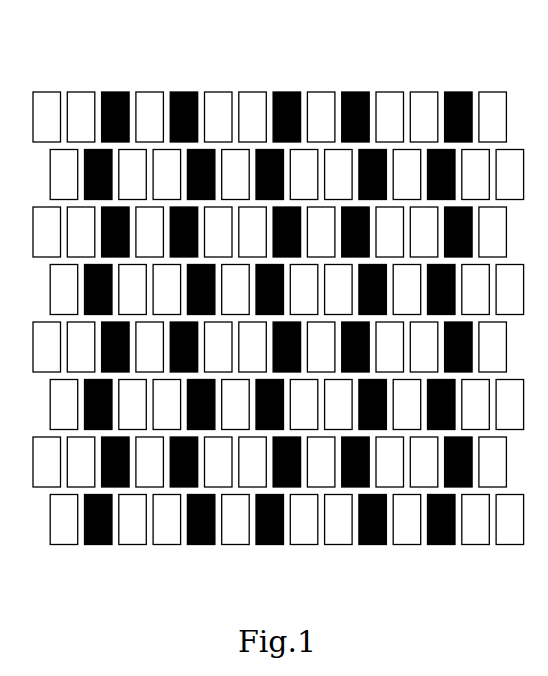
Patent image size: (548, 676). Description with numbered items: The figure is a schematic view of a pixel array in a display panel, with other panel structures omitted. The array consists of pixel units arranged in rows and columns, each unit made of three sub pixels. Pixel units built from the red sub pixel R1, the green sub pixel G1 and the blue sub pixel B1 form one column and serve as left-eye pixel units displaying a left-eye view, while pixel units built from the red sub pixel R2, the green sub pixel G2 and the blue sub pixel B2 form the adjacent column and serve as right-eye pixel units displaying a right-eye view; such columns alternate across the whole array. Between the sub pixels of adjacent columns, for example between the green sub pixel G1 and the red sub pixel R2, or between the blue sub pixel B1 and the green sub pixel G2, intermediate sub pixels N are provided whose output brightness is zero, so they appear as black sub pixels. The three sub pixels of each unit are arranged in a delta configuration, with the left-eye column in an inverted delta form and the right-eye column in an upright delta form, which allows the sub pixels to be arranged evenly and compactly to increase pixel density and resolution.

The intermediate sub pixel N is at (115, 92).
The red sub pixel R1 is at (218, 289).
The green sub pixel G1 is at (252, 289).
The red sub pixel R2 is at (321, 289).
The blue sub pixel B1 is at (235, 347).
The green sub pixel G2 is at (304, 347).
The blue sub pixel B2 is at (338, 347).